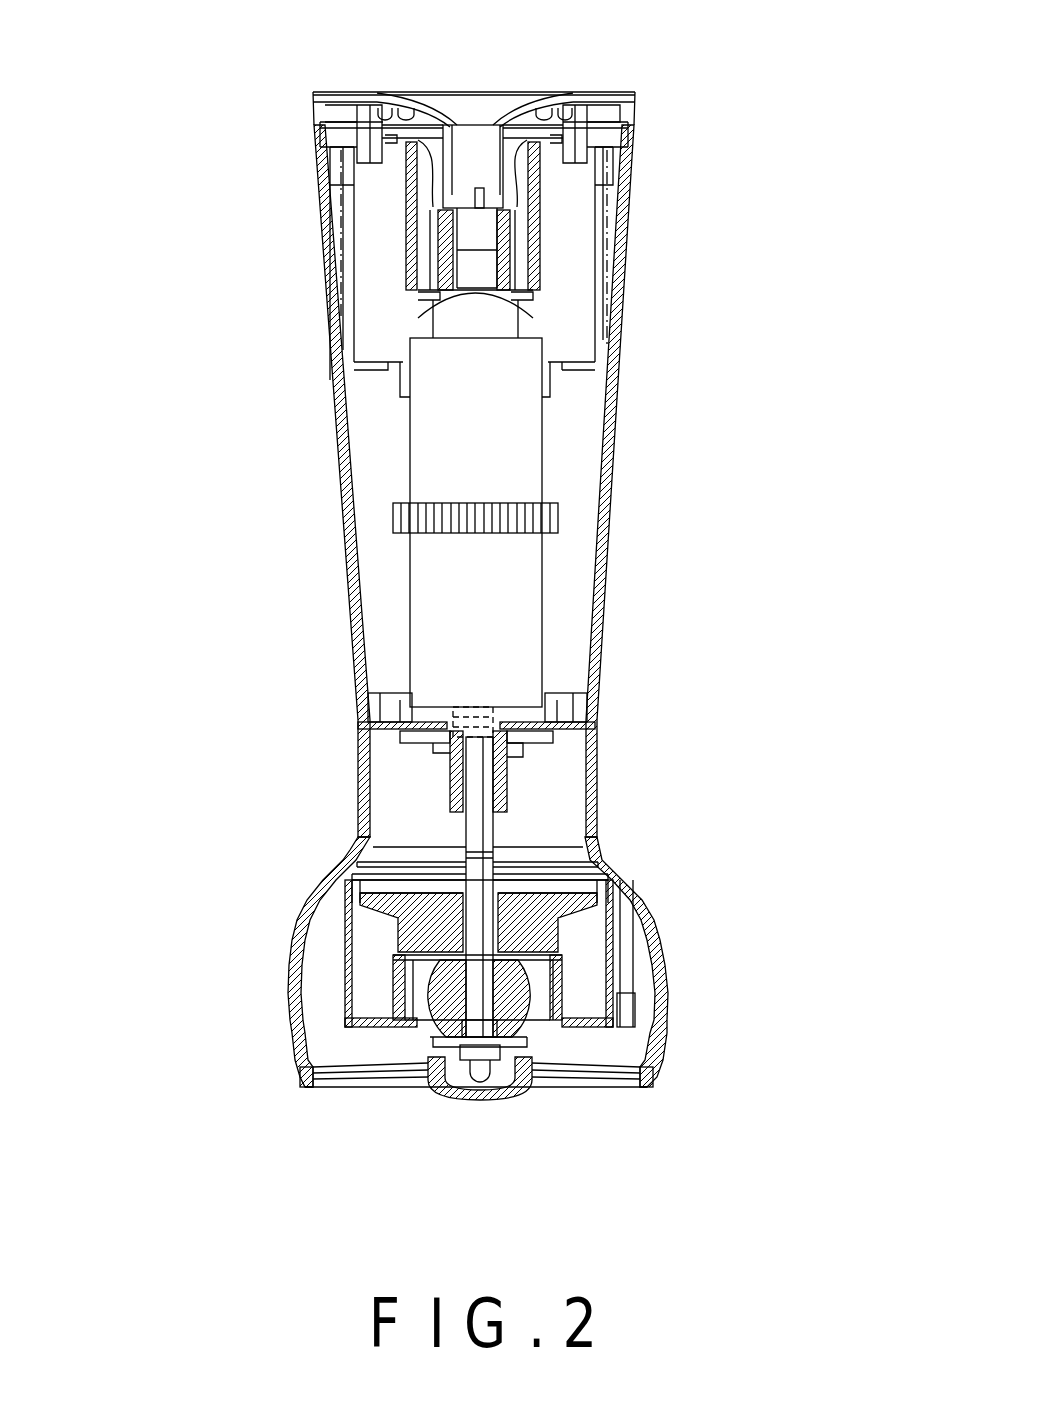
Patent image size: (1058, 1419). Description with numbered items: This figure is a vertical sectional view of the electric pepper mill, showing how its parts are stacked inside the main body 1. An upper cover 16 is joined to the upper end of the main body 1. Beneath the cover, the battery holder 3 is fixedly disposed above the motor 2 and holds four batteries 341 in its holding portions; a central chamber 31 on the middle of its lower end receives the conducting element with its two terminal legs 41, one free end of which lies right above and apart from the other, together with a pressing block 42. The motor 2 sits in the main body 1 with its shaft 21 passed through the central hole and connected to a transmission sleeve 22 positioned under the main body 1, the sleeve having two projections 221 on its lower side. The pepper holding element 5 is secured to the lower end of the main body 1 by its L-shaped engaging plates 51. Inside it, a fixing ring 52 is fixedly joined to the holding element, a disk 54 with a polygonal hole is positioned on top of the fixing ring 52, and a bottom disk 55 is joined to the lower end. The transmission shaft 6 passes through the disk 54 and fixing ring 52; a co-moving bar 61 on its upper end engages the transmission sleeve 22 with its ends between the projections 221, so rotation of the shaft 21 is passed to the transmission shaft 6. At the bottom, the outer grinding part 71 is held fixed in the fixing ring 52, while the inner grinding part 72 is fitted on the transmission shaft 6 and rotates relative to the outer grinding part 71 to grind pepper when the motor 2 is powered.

The main body 1 is at (322, 398).
The upper cover 16 is at (546, 100).
The motor 2 is at (510, 595).
The shaft 21 is at (500, 690).
The transmission sleeve 22 is at (540, 742).
The projections 221 is at (420, 762).
The battery holder 3 is at (608, 274).
The central chamber 31 is at (482, 235).
The batteries 341 is at (612, 340).
The terminal legs 41 is at (480, 255).
The pressing block 42 is at (610, 247).
The pepper holding element 5 is at (303, 955).
The L-shaped engaging plates 51 is at (395, 695).
The fixing ring 52 is at (622, 960).
The disk 54 is at (622, 902).
The bottom disk 55 is at (490, 1103).
The transmission shaft 6 is at (390, 823).
The co-moving bar 61 is at (555, 808).
The outer grinding part 71 is at (427, 1023).
The inner grinding part 72 is at (523, 1020).